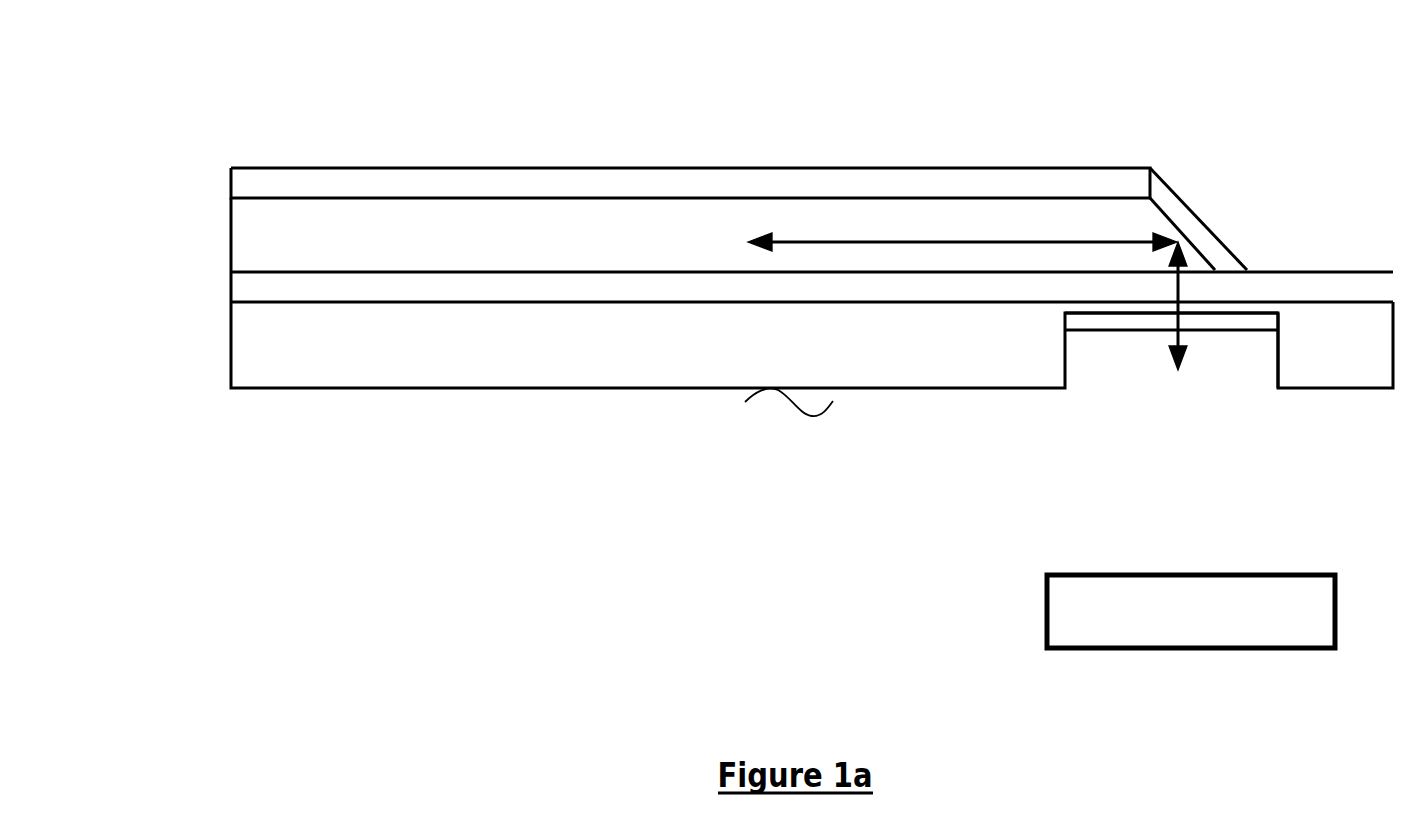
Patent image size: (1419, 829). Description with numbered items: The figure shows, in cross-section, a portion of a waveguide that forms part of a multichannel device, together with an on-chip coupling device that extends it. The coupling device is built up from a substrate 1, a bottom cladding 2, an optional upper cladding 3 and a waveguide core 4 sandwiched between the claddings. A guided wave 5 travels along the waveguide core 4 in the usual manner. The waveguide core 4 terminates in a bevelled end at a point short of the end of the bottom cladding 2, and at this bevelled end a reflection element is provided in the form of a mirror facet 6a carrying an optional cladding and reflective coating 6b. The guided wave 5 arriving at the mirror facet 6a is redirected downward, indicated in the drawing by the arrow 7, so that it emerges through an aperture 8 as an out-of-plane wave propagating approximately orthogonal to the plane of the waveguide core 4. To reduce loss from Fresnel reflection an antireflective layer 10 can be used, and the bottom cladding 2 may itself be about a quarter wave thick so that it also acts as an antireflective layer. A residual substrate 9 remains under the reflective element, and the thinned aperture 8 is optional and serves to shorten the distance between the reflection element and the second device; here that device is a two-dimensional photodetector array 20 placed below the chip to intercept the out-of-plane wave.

The substrate 1 is at (283, 350).
The bottom cladding 2 is at (245, 287).
The upper cladding 3 is at (440, 183).
The waveguide core 4 is at (662, 235).
The guided wave 5 is at (847, 242).
The mirror facet 6a is at (1203, 245).
The reflective coating 6b is at (1178, 208).
The reflected light direction 7 is at (1173, 365).
The aperture 8 is at (1208, 350).
The residual substrate 9 is at (1228, 307).
The antireflective layer 10 is at (1262, 323).
The two-dimensional photodetector array 20 is at (1047, 617).